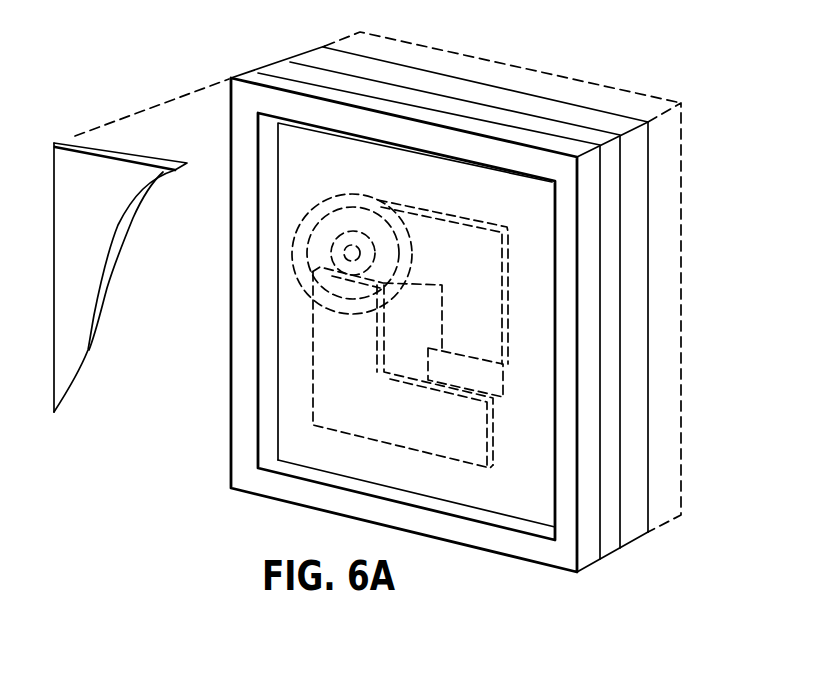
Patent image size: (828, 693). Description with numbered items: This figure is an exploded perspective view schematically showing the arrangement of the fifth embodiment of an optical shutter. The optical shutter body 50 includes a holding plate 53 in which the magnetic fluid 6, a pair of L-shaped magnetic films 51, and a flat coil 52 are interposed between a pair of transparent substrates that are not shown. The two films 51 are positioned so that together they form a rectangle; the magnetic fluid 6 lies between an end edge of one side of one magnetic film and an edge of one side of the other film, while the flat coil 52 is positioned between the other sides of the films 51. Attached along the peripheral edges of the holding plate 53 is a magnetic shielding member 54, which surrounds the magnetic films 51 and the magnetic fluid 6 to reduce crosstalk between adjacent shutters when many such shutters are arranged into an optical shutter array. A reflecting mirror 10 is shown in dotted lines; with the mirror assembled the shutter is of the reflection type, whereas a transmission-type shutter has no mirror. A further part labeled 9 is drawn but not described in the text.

The magnetic fluid 6 is at (508, 380).
The cover flap / housing wall 9 is at (80, 347).
The reflecting mirror 10 is at (670, 520).
The optical shutter body 50 is at (570, 62).
The L-shaped magnetic films 51 is at (468, 232).
The coil 52 is at (303, 263).
The holding plate 53 is at (520, 508).
The magnetic shielding member 54 is at (560, 555).